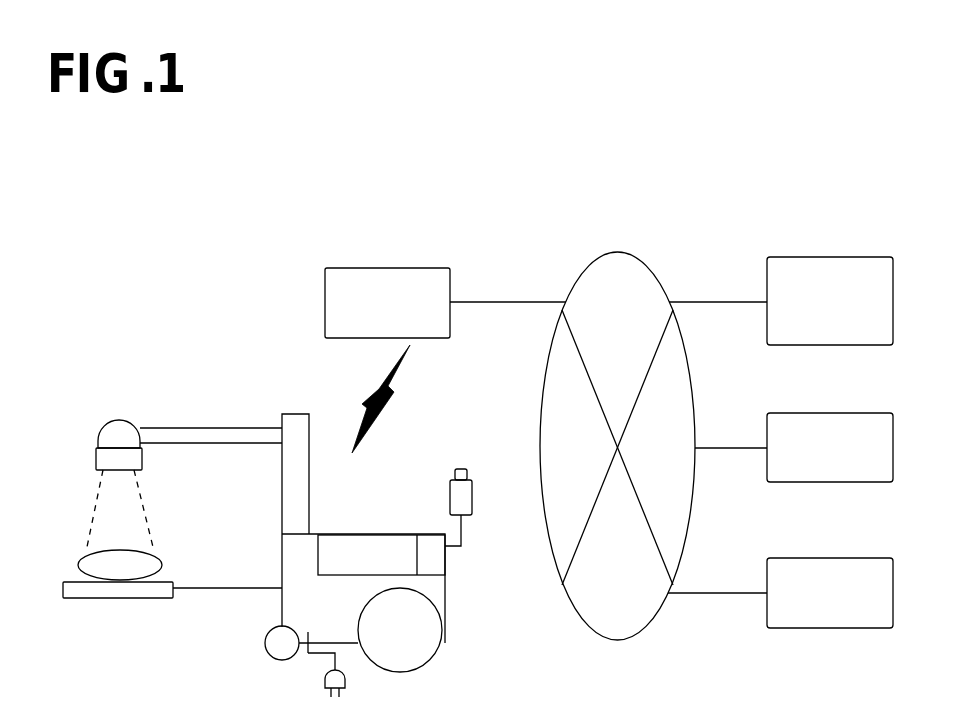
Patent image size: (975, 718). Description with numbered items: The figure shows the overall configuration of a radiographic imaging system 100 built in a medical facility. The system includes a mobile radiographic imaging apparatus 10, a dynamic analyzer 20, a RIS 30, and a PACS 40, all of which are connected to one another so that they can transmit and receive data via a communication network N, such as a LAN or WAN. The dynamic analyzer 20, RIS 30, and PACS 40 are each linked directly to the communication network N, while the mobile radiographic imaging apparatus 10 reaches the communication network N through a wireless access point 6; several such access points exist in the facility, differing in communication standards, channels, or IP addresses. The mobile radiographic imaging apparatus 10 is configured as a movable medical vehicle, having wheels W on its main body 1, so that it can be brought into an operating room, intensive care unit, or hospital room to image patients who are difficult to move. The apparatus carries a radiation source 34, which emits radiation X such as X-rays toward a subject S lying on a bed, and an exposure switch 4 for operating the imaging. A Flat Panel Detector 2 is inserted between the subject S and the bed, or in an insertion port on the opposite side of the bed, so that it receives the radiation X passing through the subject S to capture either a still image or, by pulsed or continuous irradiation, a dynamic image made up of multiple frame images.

The radiographic imaging system 100 is at (731, 151).
The wireless access point 6 is at (396, 268).
The communication network N is at (649, 263).
The dynamic analyzer 20 is at (853, 256).
The RIS 30 is at (853, 413).
The PACS 40 is at (853, 558).
The mobile radiographic imaging apparatus 10 is at (326, 429).
The main body 1 is at (448, 594).
The wheel W is at (412, 650).
The exposure switch 4 is at (465, 497).
The radiation source 34 is at (103, 434).
The radiation X is at (142, 503).
The subject S is at (157, 563).
The Flat Panel Detector 2 is at (72, 588).